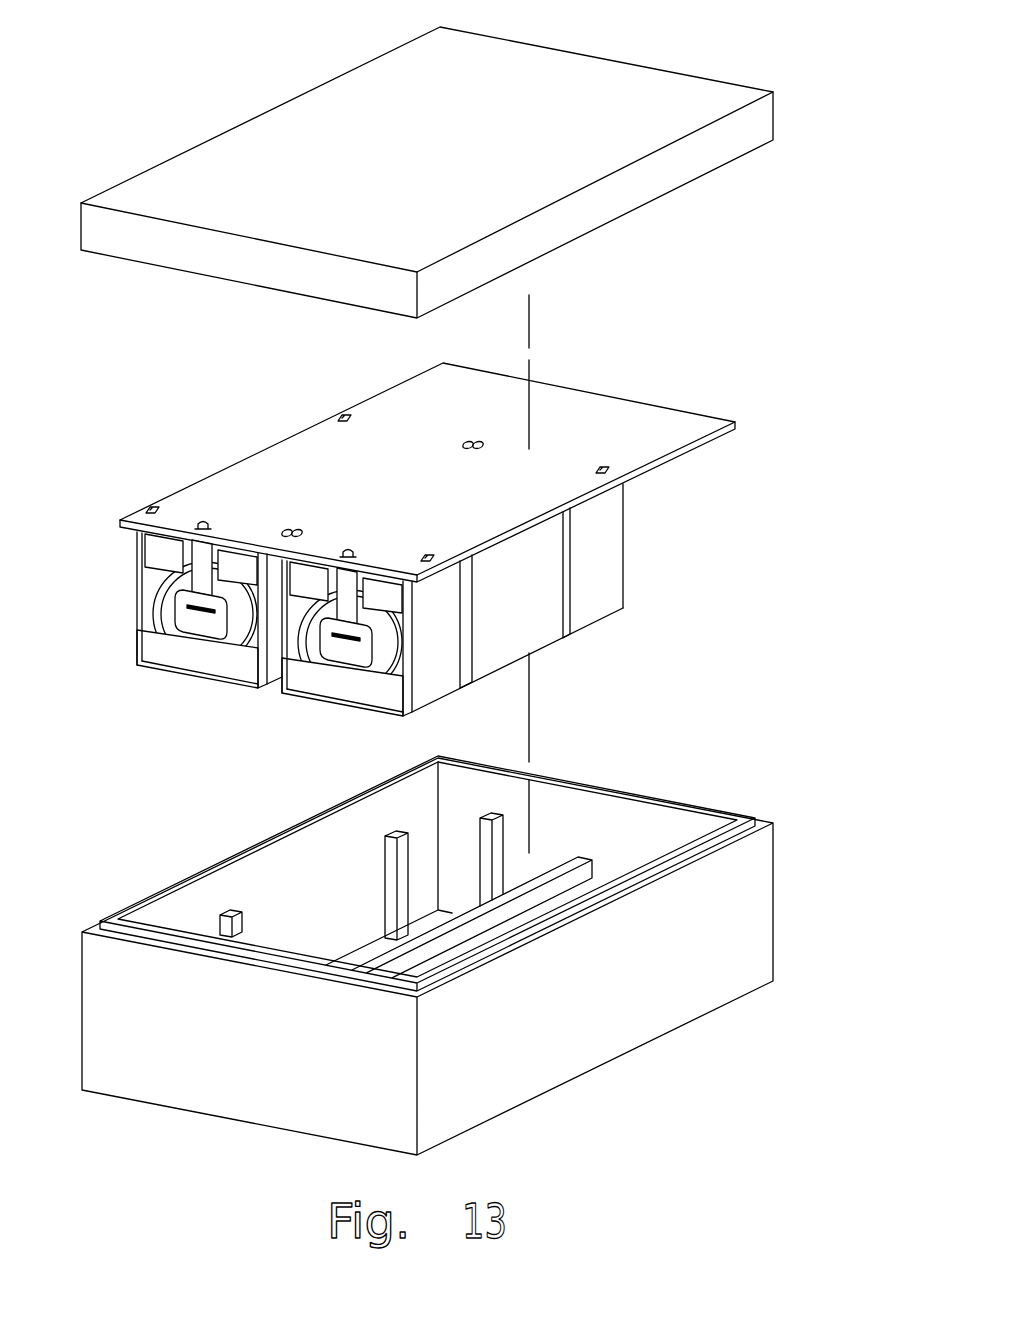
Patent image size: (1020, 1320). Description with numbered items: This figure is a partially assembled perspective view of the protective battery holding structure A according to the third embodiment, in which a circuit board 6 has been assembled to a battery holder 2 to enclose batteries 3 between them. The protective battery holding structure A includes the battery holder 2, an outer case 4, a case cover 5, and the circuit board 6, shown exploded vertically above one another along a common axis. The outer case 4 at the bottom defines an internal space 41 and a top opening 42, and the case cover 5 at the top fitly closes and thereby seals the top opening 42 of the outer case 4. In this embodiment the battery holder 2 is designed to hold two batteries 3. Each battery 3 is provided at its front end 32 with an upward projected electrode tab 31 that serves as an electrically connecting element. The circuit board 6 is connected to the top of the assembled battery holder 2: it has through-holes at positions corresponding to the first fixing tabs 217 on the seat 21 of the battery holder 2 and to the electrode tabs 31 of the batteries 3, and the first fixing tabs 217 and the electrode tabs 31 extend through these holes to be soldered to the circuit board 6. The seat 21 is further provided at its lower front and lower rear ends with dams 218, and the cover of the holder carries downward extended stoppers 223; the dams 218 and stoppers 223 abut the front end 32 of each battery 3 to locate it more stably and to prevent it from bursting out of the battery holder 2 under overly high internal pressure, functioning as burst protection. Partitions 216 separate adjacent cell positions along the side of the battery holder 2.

The battery holder 2 is at (642, 545).
The battery 3 is at (175, 628).
The outer case 4 is at (568, 1053).
The case cover 5 is at (635, 82).
The circuit board 6 is at (557, 413).
The seat 21 is at (137, 595).
The electrode tab 31 is at (347, 548).
The front end 32 is at (153, 607).
The internal space 41 is at (672, 827).
The top opening 42 is at (630, 817).
The partition 216 is at (562, 578).
The first fixing tab 217 is at (605, 467).
The dam 218 is at (148, 648).
The stopper 223 is at (155, 547).
The protective battery holding structure A is at (735, 652).